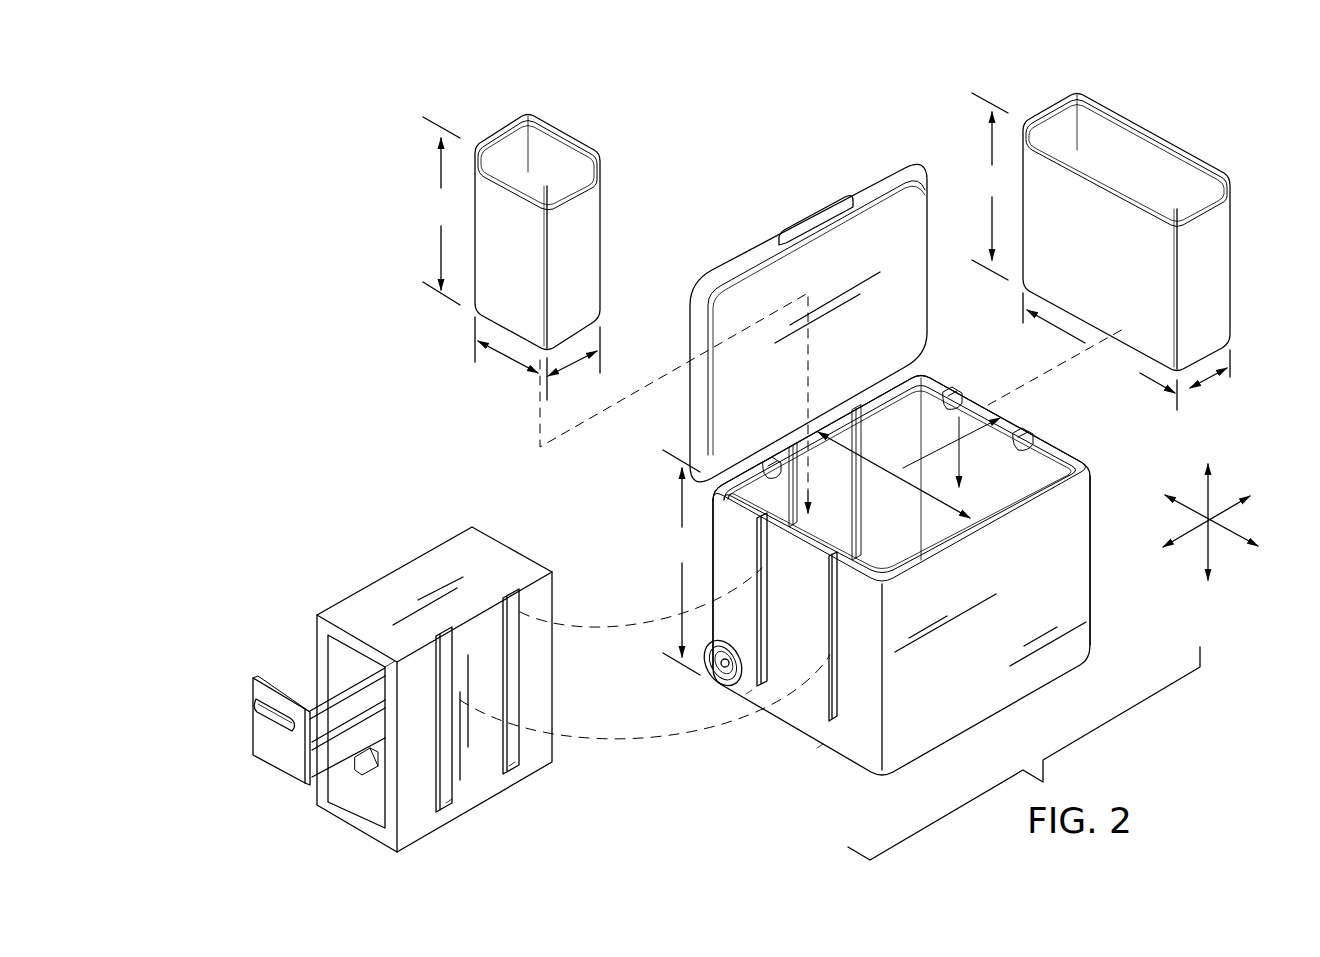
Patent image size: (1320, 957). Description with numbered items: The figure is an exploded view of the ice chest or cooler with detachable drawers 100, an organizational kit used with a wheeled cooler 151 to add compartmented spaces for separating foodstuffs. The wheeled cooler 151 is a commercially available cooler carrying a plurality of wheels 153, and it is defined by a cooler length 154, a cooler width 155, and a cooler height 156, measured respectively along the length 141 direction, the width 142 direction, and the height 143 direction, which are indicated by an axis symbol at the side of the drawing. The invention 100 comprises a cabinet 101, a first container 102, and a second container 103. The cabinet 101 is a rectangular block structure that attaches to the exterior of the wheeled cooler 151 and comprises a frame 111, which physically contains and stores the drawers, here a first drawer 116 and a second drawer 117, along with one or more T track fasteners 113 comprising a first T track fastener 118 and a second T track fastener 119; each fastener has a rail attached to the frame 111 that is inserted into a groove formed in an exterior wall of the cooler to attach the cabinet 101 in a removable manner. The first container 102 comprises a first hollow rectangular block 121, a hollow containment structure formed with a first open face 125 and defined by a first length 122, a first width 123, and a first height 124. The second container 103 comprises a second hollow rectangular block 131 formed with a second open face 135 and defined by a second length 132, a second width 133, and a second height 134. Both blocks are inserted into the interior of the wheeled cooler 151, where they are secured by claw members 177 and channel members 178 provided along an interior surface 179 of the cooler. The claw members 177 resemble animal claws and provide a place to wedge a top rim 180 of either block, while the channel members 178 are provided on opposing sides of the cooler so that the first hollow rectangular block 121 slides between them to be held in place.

The ice chest or cooler with detachable drawers 100 is at (288, 172).
The cabinet 101 is at (552, 583).
The first container 102 is at (1052, 87).
The second container 103 is at (484, 113).
The frame 111 is at (393, 593).
The T track fasteners 113 is at (762, 630).
The first drawer 116 is at (262, 730).
The second drawer 117 is at (360, 802).
The first T track fastener 118 is at (818, 747).
The second T track fastener 119 is at (747, 693).
The first hollow rectangular block 121 is at (1230, 233).
The first length 122 is at (1100, 351).
The first width 123 is at (1207, 380).
The first height 124 is at (984, 186).
The first open face 125 is at (1150, 157).
The second hollow rectangular block 131 is at (602, 227).
The second length 132 is at (513, 367).
The second width 133 is at (573, 364).
The second height 134 is at (433, 211).
The second open face 135 is at (568, 155).
The length direction 141 is at (1260, 547).
The width direction 142 is at (1253, 494).
The height direction 143 is at (1210, 460).
The wheeled cooler 151 is at (908, 618).
The wheels 153 is at (717, 693).
The cooler length 154 is at (900, 483).
The cooler width 155 is at (917, 460).
The cooler height 156 is at (678, 562).
The claw members 177 is at (1040, 453).
The channel members 178 is at (856, 407).
The interior surface 179 is at (753, 493).
The top rim 180 is at (1210, 160).